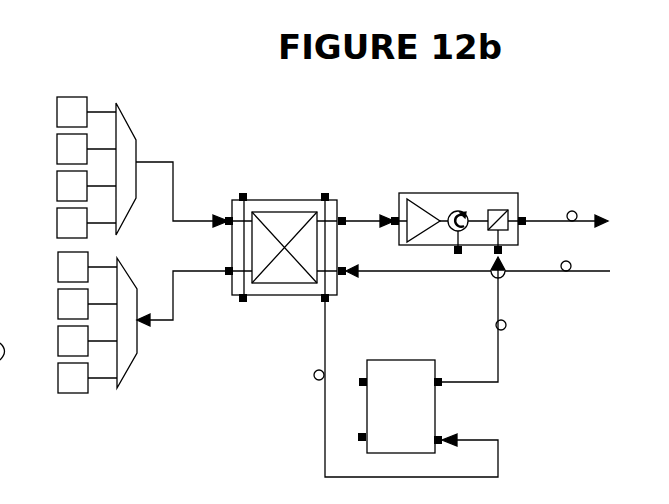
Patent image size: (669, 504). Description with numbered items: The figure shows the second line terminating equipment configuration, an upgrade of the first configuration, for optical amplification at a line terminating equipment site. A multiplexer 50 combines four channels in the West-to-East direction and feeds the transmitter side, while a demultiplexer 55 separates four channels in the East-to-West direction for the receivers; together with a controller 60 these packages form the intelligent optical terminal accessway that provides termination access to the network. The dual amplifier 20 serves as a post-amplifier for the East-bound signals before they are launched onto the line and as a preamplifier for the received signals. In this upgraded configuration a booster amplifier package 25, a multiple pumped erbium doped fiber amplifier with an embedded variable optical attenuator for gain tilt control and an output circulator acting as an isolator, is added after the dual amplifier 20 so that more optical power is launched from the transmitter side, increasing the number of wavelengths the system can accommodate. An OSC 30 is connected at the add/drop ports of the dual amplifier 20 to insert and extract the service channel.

The multiplexer 50 is at (133, 140).
The demultiplexer 55 is at (133, 348).
The dual amplifier 20 is at (292, 198).
The booster amplifier package 25 is at (445, 192).
The optical service channel (OSC) 30 is at (392, 360).
The controller 60 is at (190, 503).